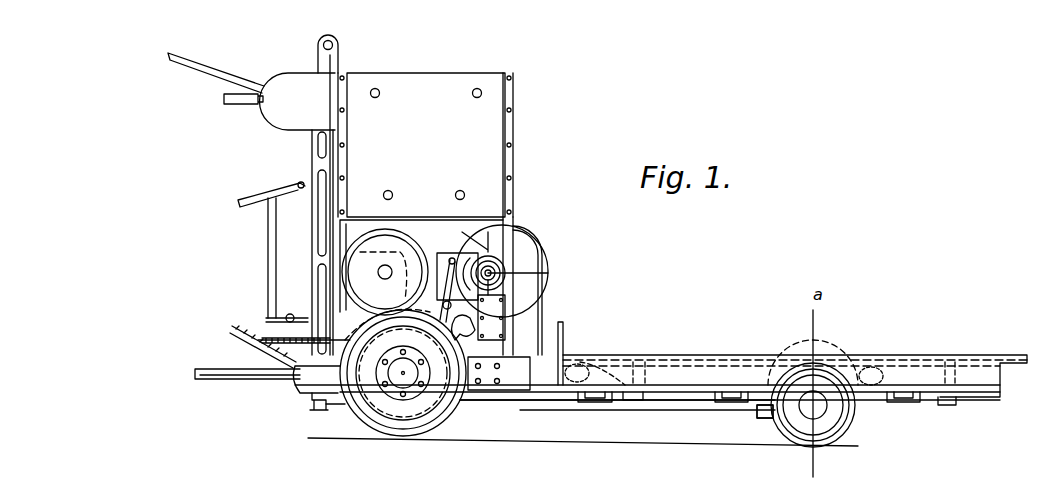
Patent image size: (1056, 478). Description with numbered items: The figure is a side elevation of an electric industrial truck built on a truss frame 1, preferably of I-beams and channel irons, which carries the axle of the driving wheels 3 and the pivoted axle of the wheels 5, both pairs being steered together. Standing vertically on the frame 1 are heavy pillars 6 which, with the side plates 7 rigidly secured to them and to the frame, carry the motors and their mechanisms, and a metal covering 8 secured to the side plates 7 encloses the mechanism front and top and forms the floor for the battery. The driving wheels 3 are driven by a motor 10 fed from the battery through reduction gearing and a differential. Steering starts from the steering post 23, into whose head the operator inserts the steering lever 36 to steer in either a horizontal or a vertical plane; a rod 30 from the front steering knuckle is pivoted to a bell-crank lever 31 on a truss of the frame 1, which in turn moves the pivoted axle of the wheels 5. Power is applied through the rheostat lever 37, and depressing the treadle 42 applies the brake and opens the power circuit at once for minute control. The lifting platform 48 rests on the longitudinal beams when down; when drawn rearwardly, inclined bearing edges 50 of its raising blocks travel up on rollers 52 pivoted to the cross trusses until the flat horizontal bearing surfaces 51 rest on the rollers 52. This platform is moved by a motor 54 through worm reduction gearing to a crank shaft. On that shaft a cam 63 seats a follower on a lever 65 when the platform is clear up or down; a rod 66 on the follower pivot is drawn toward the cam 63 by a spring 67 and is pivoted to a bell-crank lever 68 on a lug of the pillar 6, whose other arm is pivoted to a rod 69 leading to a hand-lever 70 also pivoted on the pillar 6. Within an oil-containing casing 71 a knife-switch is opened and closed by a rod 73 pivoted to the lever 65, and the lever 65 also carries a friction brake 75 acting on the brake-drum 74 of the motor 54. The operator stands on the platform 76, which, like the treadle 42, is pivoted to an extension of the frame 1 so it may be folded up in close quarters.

The truss frame 1 is at (646, 383).
The driving wheels 3 is at (448, 418).
The wheels 5 is at (852, 422).
The pillars 6 is at (316, 157).
The side plates 7 is at (497, 232).
The metal covering 8 is at (545, 265).
The motor 10 is at (410, 243).
The steering post 23 is at (310, 400).
The rod 30 is at (562, 412).
The bell-crank lever 31 is at (765, 418).
The steering lever 36 is at (218, 68).
The rheostat lever 37 is at (243, 105).
The treadle 42 is at (232, 328).
The lifting platform 48 is at (742, 357).
The inclined bearing edges 50 is at (632, 398).
The flat horizontal bearing surfaces 51 is at (640, 402).
The rollers 52 is at (724, 374).
The motor 54 is at (524, 250).
The cam 63 is at (472, 326).
The lever 65 is at (443, 304).
The rod 66 is at (340, 345).
The spring 67 is at (293, 345).
The bell-crank lever 68 is at (289, 314).
The rod 69 is at (266, 270).
The hand-lever 70 is at (270, 196).
The oil-containing casing 71 is at (498, 316).
The rod 73 is at (457, 287).
The brake-drum 74 is at (522, 273).
The friction brake 75 is at (470, 263).
The operator's platform 76 is at (223, 378).